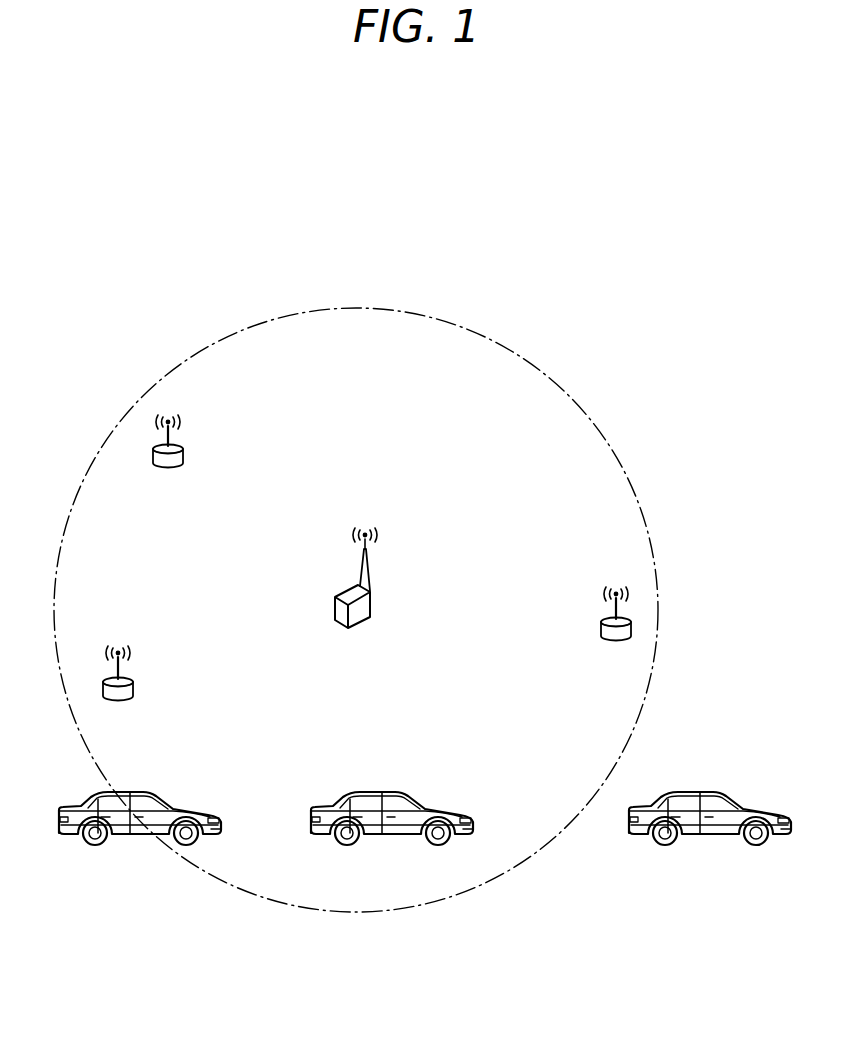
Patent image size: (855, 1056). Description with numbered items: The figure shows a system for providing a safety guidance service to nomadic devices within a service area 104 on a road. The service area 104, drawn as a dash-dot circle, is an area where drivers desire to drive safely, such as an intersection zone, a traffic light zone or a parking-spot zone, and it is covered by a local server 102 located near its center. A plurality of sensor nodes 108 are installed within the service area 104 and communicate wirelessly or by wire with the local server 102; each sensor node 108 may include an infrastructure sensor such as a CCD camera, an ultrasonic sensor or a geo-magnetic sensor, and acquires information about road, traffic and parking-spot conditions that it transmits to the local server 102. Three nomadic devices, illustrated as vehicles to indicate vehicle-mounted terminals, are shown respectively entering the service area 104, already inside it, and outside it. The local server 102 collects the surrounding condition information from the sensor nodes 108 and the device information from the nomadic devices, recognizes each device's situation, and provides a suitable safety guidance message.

The local server 102 is at (368, 608).
The service area 104 is at (571, 397).
The sensor node 108 is at (183, 458).